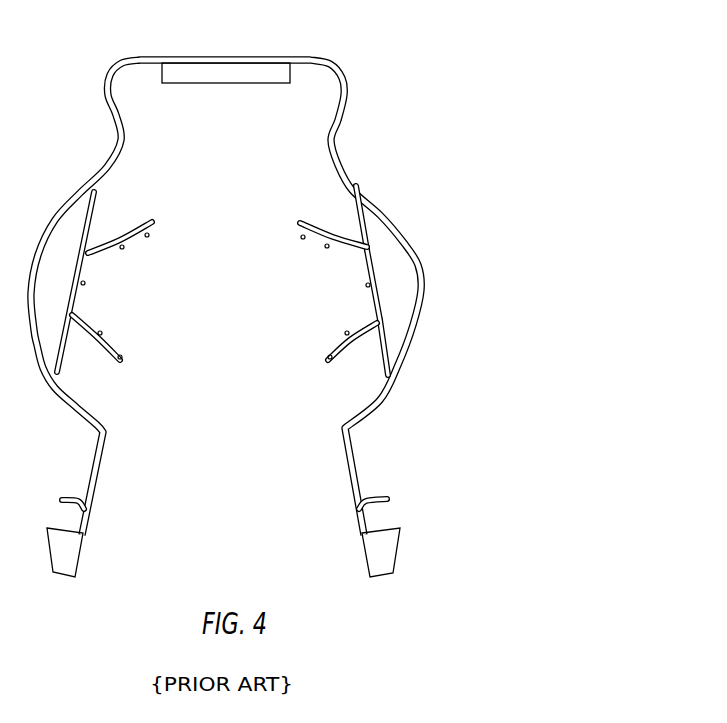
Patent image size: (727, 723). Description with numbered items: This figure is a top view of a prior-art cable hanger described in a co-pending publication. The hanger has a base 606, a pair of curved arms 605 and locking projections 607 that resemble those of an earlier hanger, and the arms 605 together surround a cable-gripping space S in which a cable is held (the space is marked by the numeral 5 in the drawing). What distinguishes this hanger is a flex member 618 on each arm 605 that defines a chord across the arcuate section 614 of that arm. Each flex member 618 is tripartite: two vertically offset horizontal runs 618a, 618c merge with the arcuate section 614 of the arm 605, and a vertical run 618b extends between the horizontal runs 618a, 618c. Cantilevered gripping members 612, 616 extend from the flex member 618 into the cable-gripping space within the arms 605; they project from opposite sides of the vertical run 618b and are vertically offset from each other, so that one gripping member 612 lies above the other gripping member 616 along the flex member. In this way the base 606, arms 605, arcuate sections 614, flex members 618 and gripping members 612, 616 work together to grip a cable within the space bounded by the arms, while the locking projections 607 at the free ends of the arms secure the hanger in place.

The prior art frame assembly 5 is at (234, 294).
The curved arms 605 is at (353, 178).
The base 606 is at (310, 58).
The locking projections 607 is at (387, 552).
The cantilevered gripping member 612 is at (323, 234).
The arcuate section 614 is at (449, 246).
The cantilevered gripping member 616 is at (344, 354).
The flex member 618 is at (392, 275).
The horizontal run 618a is at (367, 243).
The vertical run 618b is at (377, 292).
The horizontal run 618c is at (390, 342).